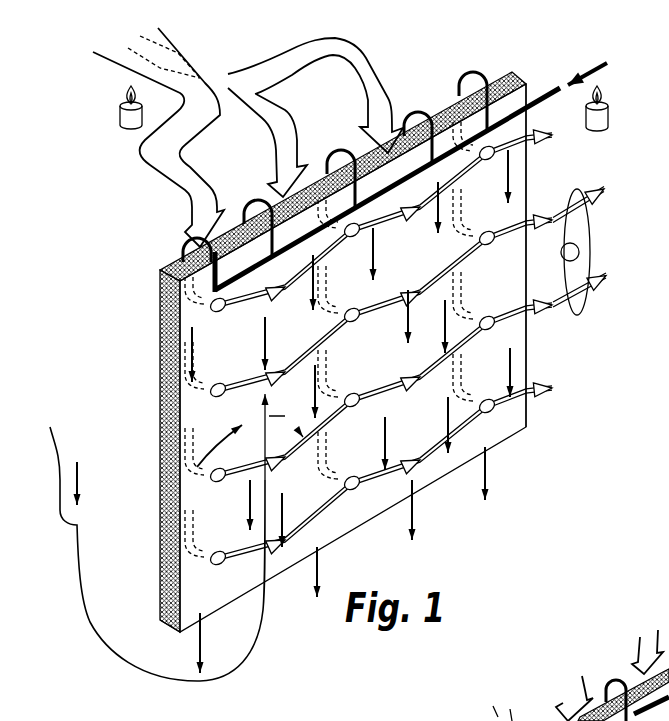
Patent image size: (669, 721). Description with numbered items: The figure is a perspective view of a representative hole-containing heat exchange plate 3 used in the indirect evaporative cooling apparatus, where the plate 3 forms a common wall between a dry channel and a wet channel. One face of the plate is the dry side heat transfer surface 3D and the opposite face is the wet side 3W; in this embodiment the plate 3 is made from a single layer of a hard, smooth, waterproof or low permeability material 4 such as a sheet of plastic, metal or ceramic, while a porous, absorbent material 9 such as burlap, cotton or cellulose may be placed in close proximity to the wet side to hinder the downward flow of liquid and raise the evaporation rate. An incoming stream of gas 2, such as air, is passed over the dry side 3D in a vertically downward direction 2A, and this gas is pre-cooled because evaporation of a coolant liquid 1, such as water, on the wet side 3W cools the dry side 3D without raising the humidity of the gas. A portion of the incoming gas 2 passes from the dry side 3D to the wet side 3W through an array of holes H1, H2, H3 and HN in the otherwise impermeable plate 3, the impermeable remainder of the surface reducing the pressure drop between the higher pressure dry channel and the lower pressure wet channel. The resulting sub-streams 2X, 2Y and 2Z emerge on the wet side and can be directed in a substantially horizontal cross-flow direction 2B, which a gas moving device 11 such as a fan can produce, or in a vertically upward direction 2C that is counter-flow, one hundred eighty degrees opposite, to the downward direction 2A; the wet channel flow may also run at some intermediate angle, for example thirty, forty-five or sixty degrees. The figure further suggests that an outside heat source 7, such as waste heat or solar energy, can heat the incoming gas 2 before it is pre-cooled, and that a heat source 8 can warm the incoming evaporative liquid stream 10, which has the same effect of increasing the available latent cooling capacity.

The coolant liquid 1 is at (608, 68).
The incoming stream of gas 2 is at (170, 42).
The downward direction 2A is at (183, 222).
The cross-flow direction 2B is at (392, 228).
The vertically upward direction 2C is at (258, 565).
The gas sub-stream 2X is at (571, 151).
The gas sub-stream 2Y is at (583, 196).
The gas sub-stream 2Z is at (572, 318).
The heat exchange plate 3 is at (160, 369).
The dry side heat transfer surface 3D is at (157, 392).
The wet side 3W is at (158, 492).
The impermeable material 4 is at (160, 410).
The outside heat source 7 is at (120, 113).
The evaporative liquid heat source 8 is at (598, 125).
The porous absorbent material 9 is at (506, 421).
The incoming evaporative liquid stream 10 is at (550, 86).
The gas moving device 11 is at (590, 303).
The hole H1 is at (216, 309).
The hole H2 is at (353, 234).
The hole H3 is at (490, 160).
The hole HN is at (494, 404).